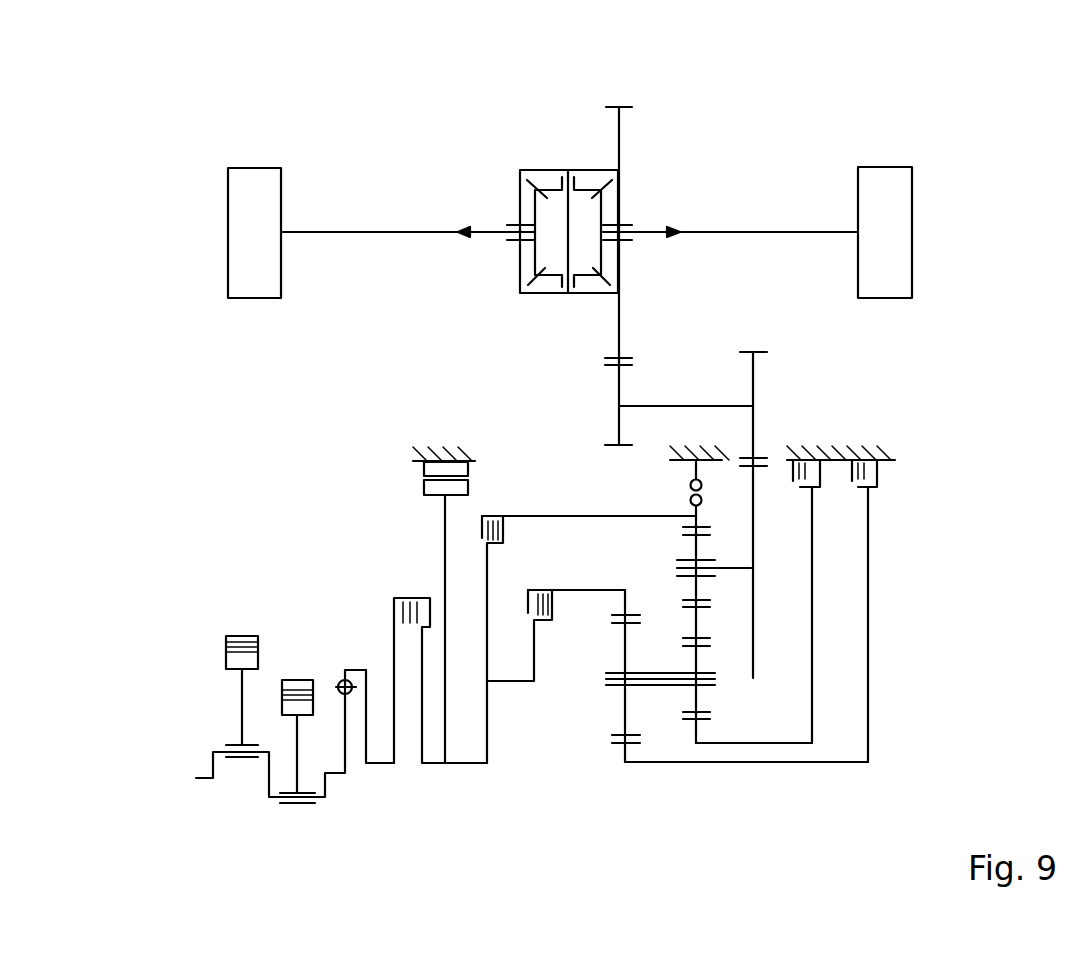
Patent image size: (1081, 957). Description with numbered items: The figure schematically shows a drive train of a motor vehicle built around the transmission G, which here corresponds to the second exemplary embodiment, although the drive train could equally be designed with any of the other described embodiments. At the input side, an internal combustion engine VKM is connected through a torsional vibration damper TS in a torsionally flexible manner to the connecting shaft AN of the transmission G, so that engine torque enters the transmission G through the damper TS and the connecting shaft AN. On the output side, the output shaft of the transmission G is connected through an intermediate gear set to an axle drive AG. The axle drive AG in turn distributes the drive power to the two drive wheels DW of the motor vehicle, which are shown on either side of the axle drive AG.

The drive wheels DW is at (252, 166).
The axle drive AG is at (559, 146).
The transmission G is at (594, 794).
The internal combustion engine VKM is at (242, 813).
The torsional vibration damper TS is at (351, 700).
The connecting shaft AN is at (382, 766).